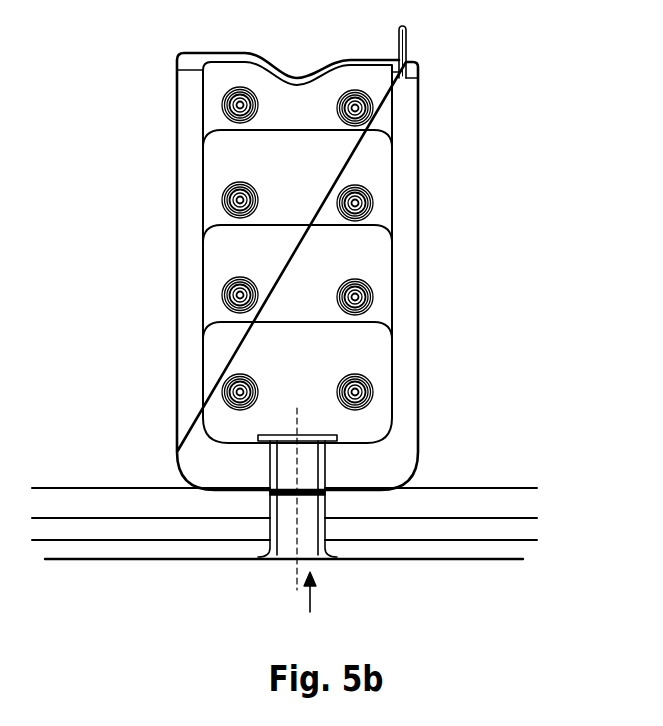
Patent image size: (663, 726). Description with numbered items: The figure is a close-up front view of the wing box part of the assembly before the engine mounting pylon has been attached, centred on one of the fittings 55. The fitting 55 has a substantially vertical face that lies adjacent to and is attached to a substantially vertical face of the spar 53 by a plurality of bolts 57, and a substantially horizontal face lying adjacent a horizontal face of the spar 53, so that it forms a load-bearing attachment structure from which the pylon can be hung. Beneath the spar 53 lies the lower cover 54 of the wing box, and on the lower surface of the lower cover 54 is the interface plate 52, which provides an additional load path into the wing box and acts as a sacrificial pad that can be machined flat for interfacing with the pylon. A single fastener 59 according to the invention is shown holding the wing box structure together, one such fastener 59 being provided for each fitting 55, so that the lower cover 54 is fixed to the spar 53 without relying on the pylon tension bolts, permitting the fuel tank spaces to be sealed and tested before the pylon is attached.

The interface plate 52 is at (498, 550).
The spar 53 is at (472, 505).
The lower cover 54 is at (490, 530).
The fitting 55 is at (313, 196).
The bolts 57 is at (225, 108).
The fastener 59 is at (313, 611).